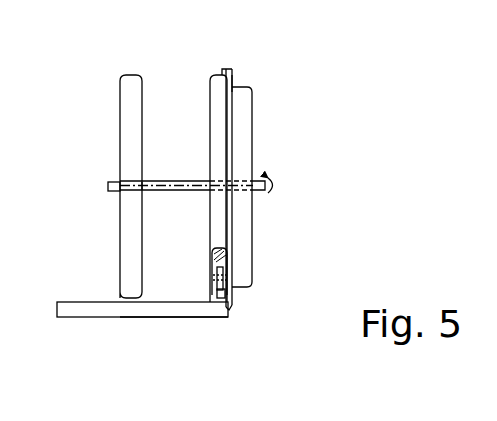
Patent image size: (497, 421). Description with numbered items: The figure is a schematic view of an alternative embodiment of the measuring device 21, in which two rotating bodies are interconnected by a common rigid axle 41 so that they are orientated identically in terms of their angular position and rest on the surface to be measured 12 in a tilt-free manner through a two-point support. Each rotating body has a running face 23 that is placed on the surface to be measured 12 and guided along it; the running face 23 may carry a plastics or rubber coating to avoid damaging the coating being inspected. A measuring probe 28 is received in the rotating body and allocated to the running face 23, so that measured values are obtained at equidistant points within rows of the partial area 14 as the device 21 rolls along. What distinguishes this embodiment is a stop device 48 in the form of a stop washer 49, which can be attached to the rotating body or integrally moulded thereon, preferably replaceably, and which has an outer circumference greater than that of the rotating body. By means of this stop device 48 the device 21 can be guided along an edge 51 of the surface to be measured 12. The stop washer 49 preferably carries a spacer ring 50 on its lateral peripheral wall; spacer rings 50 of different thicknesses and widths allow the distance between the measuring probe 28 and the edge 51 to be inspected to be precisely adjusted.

The surface to be measured 12 is at (74, 299).
The partial area 14 is at (183, 324).
The device 21 is at (257, 302).
The running face 23 is at (128, 98).
The measuring probe 28 is at (199, 282).
The common rigid axle 41 is at (157, 181).
The stop device 48 is at (234, 64).
The stop washer 49 is at (233, 76).
The spacer ring 50 is at (222, 71).
The edge 51 is at (229, 309).